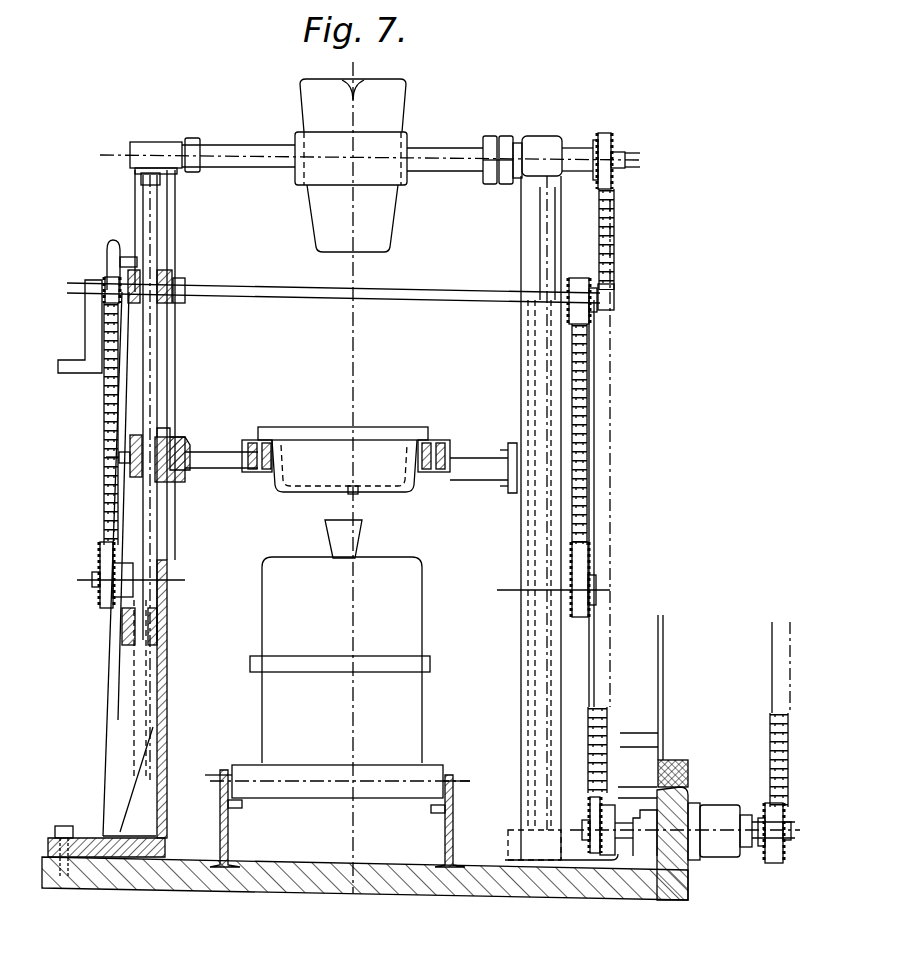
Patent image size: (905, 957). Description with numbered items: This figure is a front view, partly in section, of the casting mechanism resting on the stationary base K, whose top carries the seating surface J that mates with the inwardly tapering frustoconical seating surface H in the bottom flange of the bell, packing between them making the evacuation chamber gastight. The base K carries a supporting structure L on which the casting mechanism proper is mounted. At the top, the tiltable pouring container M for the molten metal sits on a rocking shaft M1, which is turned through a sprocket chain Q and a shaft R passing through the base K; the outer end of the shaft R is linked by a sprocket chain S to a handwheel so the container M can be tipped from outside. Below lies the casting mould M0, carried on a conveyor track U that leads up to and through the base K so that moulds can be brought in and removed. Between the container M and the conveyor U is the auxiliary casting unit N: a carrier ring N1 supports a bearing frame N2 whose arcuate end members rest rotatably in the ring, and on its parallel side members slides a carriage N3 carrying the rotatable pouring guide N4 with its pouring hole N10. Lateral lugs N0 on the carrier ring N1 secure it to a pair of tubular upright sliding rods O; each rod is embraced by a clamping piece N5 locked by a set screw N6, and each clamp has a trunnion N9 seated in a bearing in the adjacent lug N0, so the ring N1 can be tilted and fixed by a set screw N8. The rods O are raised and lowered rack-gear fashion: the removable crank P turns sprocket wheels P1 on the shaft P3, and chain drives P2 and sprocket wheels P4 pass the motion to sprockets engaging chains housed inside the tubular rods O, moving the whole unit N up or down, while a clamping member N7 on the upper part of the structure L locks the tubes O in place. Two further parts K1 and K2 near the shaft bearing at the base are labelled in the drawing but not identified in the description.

The pouring container M is at (322, 113).
The rocking shaft M1 is at (440, 150).
The upright sliding rods O is at (162, 207).
The sprocket chain Q is at (618, 238).
The clamping member N7 is at (111, 248).
The sprocket wheels P1 is at (120, 320).
The shaft P3 is at (415, 300).
The manual crank P is at (85, 378).
The chain drives P2 is at (118, 400).
The supporting structure L is at (563, 497).
The sprocket wheels P4 is at (100, 595).
The set screw N8 is at (173, 430).
The cylindrical boss or trunnion N9 is at (185, 436).
The pouring guide N4 is at (307, 428).
The auxiliary casting unit N is at (388, 395).
The carriage N3 is at (442, 443).
The set screw N6 is at (118, 457).
The clamping pieces N5 is at (133, 472).
The lateral lugs N0 is at (180, 470).
The bearing frame N2 is at (263, 462).
The pouring hole N10 is at (358, 495).
The carrier ring N1 is at (490, 472).
The casting mould M0 is at (340, 660).
The conveyor track U is at (433, 773).
The base K is at (350, 877).
The sprocket chain S is at (770, 722).
The seating surface H is at (683, 780).
The complementary seating surface J is at (678, 772).
The shaft R is at (760, 830).
The shaft bearing K1 is at (693, 862).
The coupling K2 is at (727, 848).